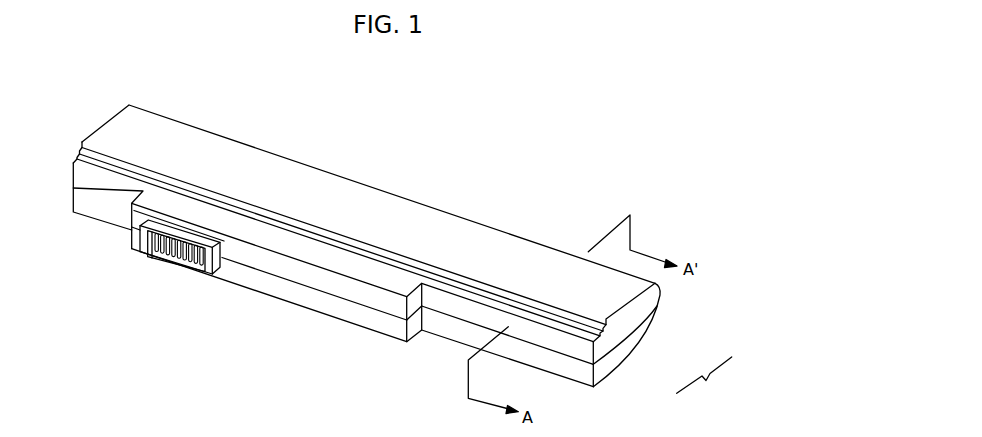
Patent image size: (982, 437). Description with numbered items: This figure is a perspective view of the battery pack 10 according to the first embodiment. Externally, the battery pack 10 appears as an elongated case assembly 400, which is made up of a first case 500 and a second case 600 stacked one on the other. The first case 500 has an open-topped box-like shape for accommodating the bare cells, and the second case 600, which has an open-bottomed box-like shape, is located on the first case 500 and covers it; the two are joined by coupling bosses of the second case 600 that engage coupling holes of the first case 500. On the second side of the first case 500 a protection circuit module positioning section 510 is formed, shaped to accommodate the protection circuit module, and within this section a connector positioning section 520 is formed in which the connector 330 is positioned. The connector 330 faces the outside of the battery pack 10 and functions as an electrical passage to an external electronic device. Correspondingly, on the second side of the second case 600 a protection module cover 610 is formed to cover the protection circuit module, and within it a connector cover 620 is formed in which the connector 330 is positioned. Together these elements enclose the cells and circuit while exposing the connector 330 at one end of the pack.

The battery pack 10 is at (66, 86).
The connector 330 is at (189, 270).
The case assembly 400 is at (705, 380).
The first case 500 is at (642, 337).
The protection circuit module positioning section 510 is at (322, 303).
The connector positioning section 520 is at (142, 253).
The second case 600 is at (651, 305).
The protection module cover 610 is at (138, 213).
The connector cover 620 is at (221, 266).